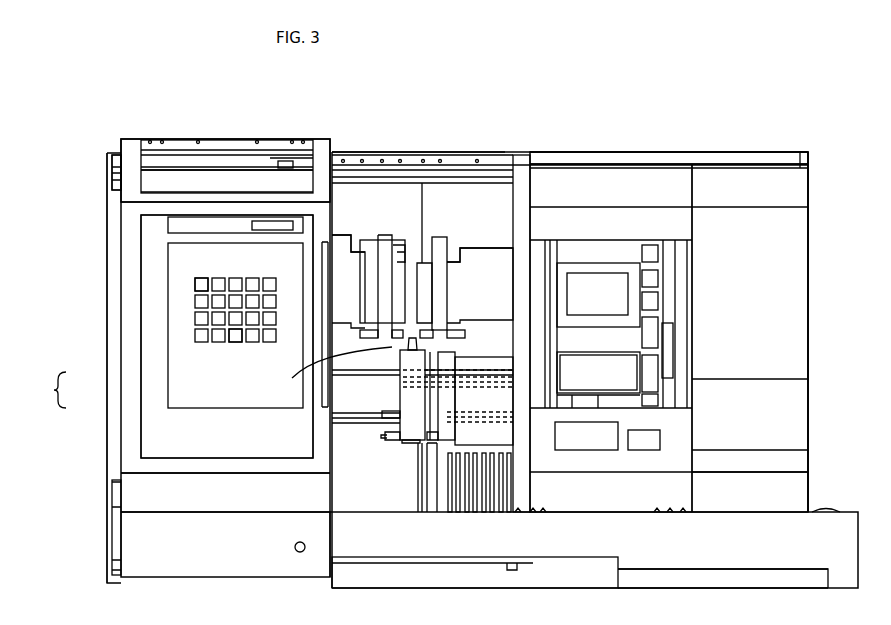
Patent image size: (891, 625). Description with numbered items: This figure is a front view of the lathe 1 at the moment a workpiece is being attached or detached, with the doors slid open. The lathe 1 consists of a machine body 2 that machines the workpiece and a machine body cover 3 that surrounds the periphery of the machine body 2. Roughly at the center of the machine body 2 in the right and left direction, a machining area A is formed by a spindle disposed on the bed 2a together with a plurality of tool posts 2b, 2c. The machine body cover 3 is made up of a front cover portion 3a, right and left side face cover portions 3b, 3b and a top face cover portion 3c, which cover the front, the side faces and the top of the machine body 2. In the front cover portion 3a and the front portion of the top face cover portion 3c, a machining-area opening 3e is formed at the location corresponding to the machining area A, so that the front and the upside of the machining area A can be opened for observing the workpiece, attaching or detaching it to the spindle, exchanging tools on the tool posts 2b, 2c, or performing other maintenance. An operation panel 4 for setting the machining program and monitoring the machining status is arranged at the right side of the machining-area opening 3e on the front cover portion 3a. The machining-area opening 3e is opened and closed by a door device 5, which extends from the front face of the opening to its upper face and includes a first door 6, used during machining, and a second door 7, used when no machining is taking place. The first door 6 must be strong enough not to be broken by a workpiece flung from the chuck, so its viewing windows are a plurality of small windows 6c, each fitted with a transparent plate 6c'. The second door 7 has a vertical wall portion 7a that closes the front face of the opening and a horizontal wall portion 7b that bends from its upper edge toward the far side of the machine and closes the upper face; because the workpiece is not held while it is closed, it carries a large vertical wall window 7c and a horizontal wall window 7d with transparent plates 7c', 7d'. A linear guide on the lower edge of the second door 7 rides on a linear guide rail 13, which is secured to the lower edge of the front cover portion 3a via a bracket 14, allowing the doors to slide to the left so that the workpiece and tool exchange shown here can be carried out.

The lathe 1 is at (672, 133).
The machine body 2 is at (450, 204).
The bed 2a is at (846, 532).
The tool post 2b is at (348, 233).
The tool post 2c is at (484, 442).
The machine body cover 3 is at (786, 153).
The front cover portion 3a is at (797, 279).
The side face cover portion 3b is at (120, 330).
The top face cover portion 3c is at (638, 152).
The machining-area opening 3e is at (515, 220).
The operation panel 4 is at (663, 303).
The door device 5 is at (55, 390).
The first door 6 is at (160, 367).
The small window 6c is at (225, 315).
The transparent plate 6c' is at (204, 315).
The second door 7 is at (119, 391).
The vertical wall portion 7a is at (127, 301).
The horizontal wall portion 7b is at (218, 140).
The vertical wall window 7c is at (201, 443).
The transparent plate 7c' is at (201, 506).
The horizontal wall window 7d is at (103, 169).
The transparent plate 7d' is at (227, 148).
The linear guide rail 13 is at (424, 560).
The bracket 14 is at (550, 577).
The machining area A is at (336, 371).